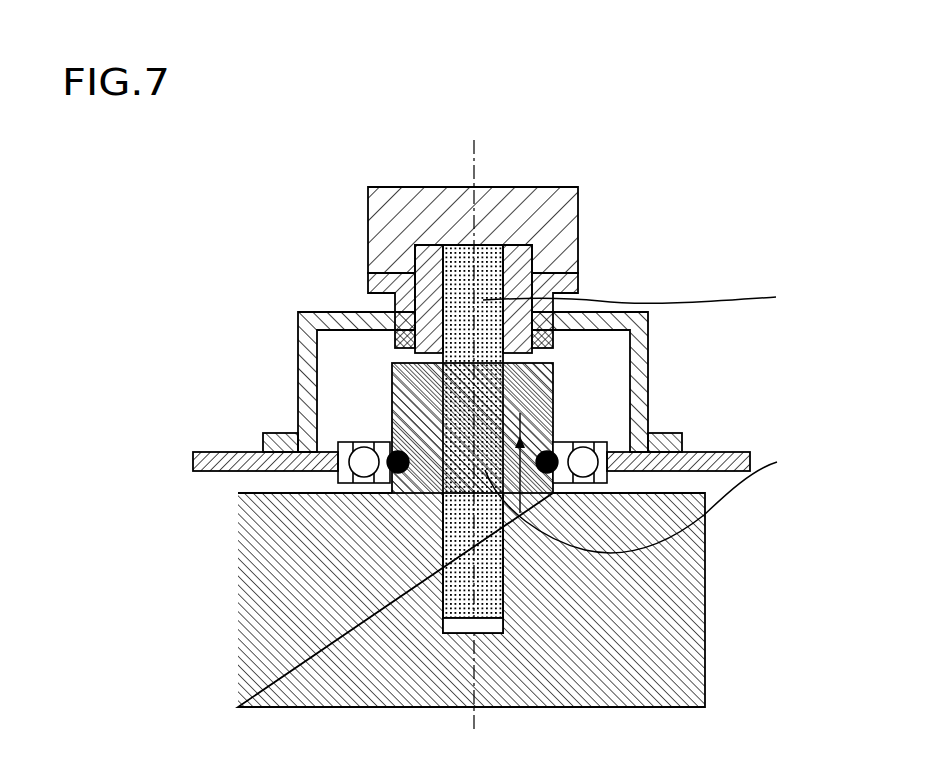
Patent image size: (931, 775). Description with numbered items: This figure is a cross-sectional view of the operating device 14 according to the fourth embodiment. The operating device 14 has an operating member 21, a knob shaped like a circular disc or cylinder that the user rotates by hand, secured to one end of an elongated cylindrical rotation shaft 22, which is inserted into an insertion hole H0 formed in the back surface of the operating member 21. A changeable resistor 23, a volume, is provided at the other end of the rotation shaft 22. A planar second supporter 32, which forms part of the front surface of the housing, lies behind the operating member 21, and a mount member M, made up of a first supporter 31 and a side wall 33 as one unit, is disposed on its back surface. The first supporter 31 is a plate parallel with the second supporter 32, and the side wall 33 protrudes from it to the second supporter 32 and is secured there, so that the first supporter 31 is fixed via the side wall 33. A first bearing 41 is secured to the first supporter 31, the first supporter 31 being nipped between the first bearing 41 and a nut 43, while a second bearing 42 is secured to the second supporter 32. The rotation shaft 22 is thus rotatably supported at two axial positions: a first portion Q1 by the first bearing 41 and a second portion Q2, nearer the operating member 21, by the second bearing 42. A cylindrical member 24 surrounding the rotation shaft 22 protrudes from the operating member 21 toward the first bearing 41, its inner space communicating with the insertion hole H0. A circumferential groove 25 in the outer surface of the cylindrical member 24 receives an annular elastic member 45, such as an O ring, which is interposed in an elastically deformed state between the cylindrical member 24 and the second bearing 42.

The operating device 14 is at (328, 203).
The operating member 21 is at (238, 604).
The rotation shaft 22 is at (486, 244).
The changeable resistor 23 is at (578, 220).
The cylindrical member 24 is at (522, 400).
The groove 25 is at (520, 423).
The first supporter 31 is at (312, 313).
The second supporter 32 is at (193, 456).
The side wall 33 is at (300, 396).
The first bearing 41 is at (368, 280).
The second bearing 42 is at (348, 442).
The nut 43 is at (395, 340).
The elastic member 45 is at (394, 452).
The mount member M is at (262, 373).
The first portion Q1 is at (645, 300).
The second portion Q2 is at (646, 502).
The insertion hole H0 is at (455, 628).